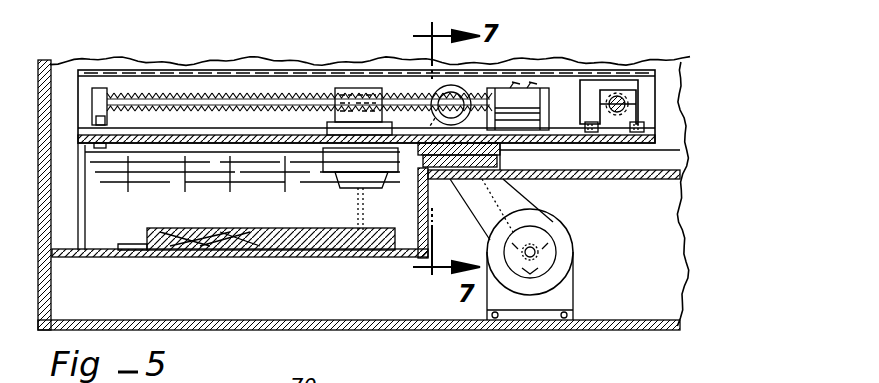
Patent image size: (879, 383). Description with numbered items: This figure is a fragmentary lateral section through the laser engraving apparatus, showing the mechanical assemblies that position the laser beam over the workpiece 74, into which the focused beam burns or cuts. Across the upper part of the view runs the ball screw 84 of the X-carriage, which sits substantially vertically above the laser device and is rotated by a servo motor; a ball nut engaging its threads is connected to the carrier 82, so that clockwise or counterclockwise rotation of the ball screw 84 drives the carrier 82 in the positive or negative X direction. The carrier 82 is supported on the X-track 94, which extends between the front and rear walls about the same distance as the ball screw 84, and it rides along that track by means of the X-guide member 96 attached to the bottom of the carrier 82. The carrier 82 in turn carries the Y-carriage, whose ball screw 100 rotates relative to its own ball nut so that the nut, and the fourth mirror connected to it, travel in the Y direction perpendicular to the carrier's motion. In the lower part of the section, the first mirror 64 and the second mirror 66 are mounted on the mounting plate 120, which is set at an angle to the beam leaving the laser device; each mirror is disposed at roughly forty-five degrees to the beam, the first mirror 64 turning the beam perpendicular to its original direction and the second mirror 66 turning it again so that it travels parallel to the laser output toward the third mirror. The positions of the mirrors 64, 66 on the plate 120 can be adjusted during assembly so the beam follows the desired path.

The ball screw 100 is at (160, 97).
The ball screw 84 is at (617, 97).
The carrier 82 is at (682, 118).
The X-track 94 is at (517, 181).
The mounting plate 120 is at (510, 178).
The first light reflecting mirror 64 is at (531, 252).
The workpiece 74 is at (310, 245).
The X-guide member 96 is at (420, 155).
The second mirror 66 is at (493, 372).